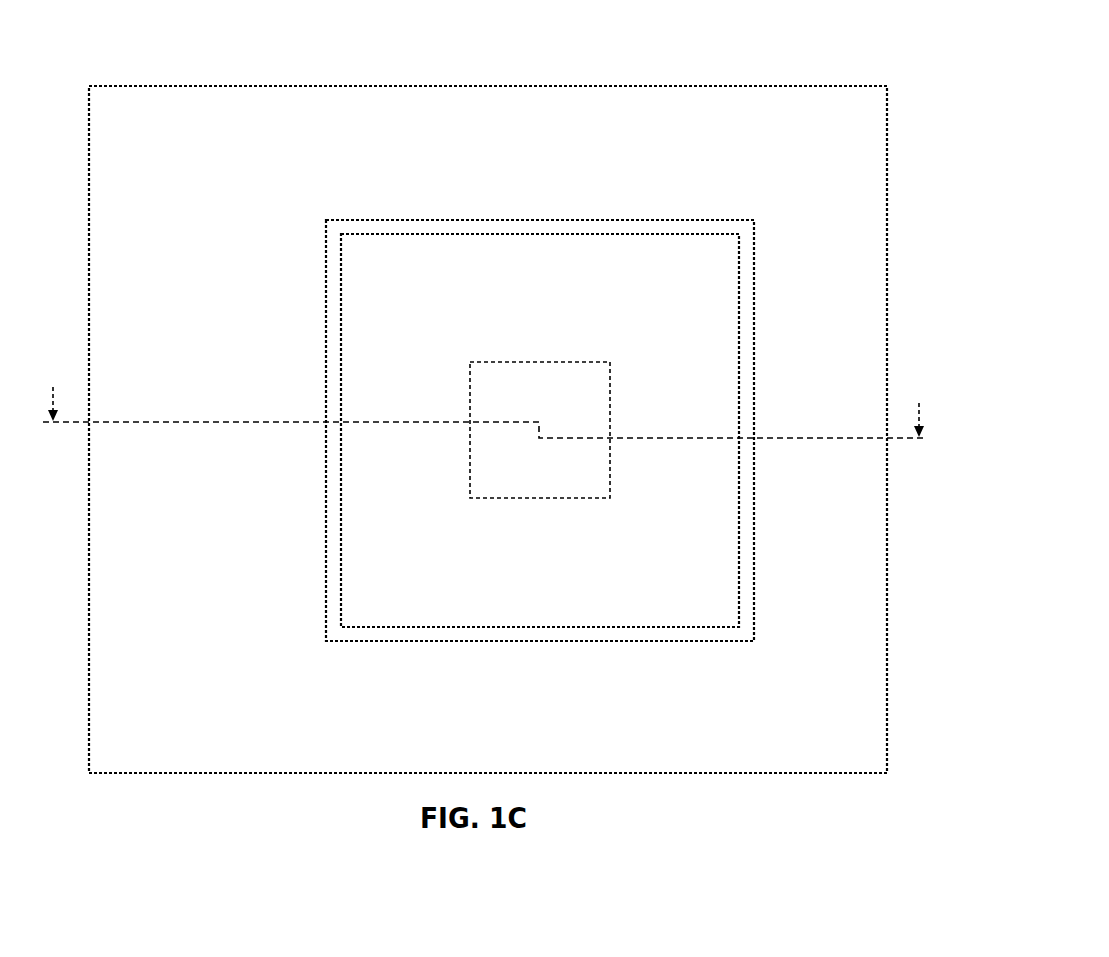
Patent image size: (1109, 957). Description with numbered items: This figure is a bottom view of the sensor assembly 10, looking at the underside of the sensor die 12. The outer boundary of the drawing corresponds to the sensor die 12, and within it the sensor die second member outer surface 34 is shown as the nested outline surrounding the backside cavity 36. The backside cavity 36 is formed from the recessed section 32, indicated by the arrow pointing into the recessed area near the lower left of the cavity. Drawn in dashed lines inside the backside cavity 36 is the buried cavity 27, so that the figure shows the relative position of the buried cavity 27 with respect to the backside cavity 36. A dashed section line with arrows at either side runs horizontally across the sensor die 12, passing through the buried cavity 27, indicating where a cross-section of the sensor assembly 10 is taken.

The sensor assembly 10 is at (843, 54).
The sensor die 12 is at (883, 108).
The second member outer surface 34 is at (873, 233).
The backside cavity 36 is at (724, 587).
The buried cavity 27 is at (602, 383).
The recessed section 32 is at (379, 595).